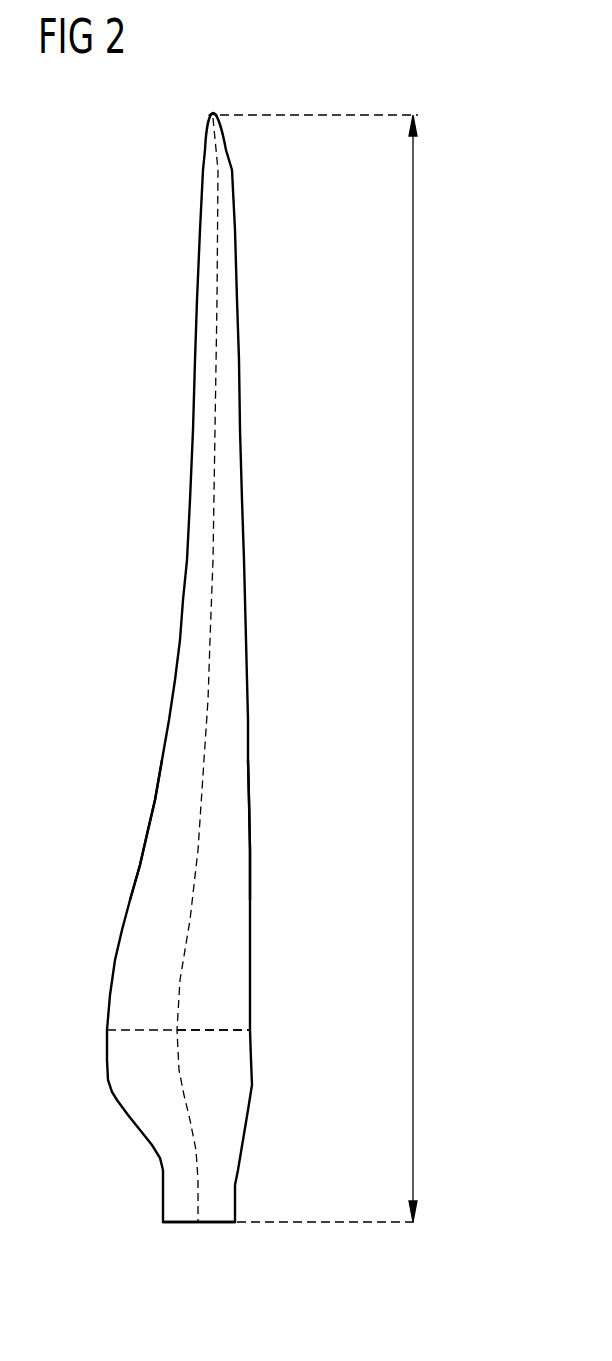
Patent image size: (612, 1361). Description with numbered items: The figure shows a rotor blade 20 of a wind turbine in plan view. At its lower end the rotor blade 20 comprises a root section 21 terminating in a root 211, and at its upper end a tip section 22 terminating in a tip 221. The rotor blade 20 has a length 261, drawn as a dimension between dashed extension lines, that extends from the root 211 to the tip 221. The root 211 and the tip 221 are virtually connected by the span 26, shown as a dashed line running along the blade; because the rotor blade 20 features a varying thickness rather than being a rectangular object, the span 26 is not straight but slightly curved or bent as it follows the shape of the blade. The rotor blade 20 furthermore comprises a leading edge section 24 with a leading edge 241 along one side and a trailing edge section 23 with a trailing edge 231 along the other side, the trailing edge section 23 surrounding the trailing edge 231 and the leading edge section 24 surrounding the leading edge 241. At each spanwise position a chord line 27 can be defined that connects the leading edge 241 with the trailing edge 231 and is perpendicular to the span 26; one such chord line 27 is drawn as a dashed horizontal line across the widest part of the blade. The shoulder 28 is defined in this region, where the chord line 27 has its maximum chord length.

The rotor blade 20 is at (232, 674).
The root section 21 is at (228, 1188).
The root 211 is at (187, 1225).
The tip section 22 is at (214, 133).
The tip 221 is at (213, 114).
The trailing edge section 23 is at (178, 734).
The trailing edge 231 is at (157, 790).
The leading edge section 24 is at (237, 769).
The leading edge 241 is at (249, 814).
The span 26 is at (208, 713).
The chord line 27 is at (218, 1028).
The shoulder 28 is at (108, 1030).
The length 261 is at (413, 668).